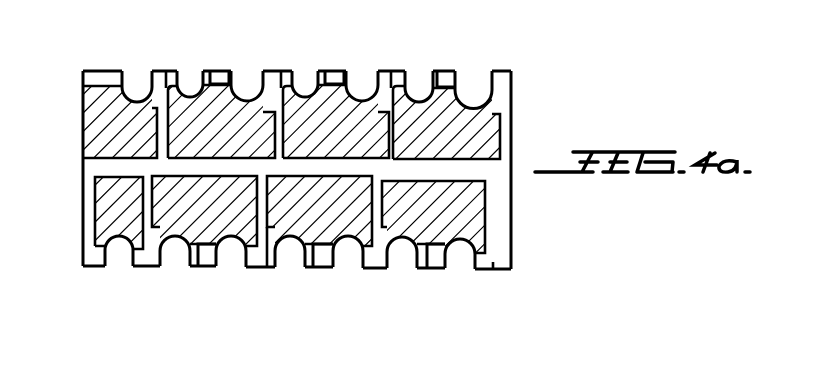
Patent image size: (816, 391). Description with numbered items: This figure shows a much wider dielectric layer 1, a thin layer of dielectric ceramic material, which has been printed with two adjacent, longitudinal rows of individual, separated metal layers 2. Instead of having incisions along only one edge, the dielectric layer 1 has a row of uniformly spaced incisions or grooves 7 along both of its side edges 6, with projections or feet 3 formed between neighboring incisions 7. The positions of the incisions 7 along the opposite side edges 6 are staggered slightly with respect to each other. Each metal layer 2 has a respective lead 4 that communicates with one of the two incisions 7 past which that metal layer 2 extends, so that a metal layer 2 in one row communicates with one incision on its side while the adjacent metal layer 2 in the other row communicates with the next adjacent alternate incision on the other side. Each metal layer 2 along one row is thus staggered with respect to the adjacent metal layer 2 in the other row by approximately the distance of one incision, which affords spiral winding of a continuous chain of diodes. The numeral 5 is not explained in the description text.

The dielectric layer 1 is at (403, 67).
The metal layer 2 is at (496, 132).
The projection or foot 3 is at (167, 67).
The lead 4 is at (212, 67).
The side wall 5 is at (83, 127).
The side edge 6 is at (392, 68).
The incision or groove 7 is at (137, 67).